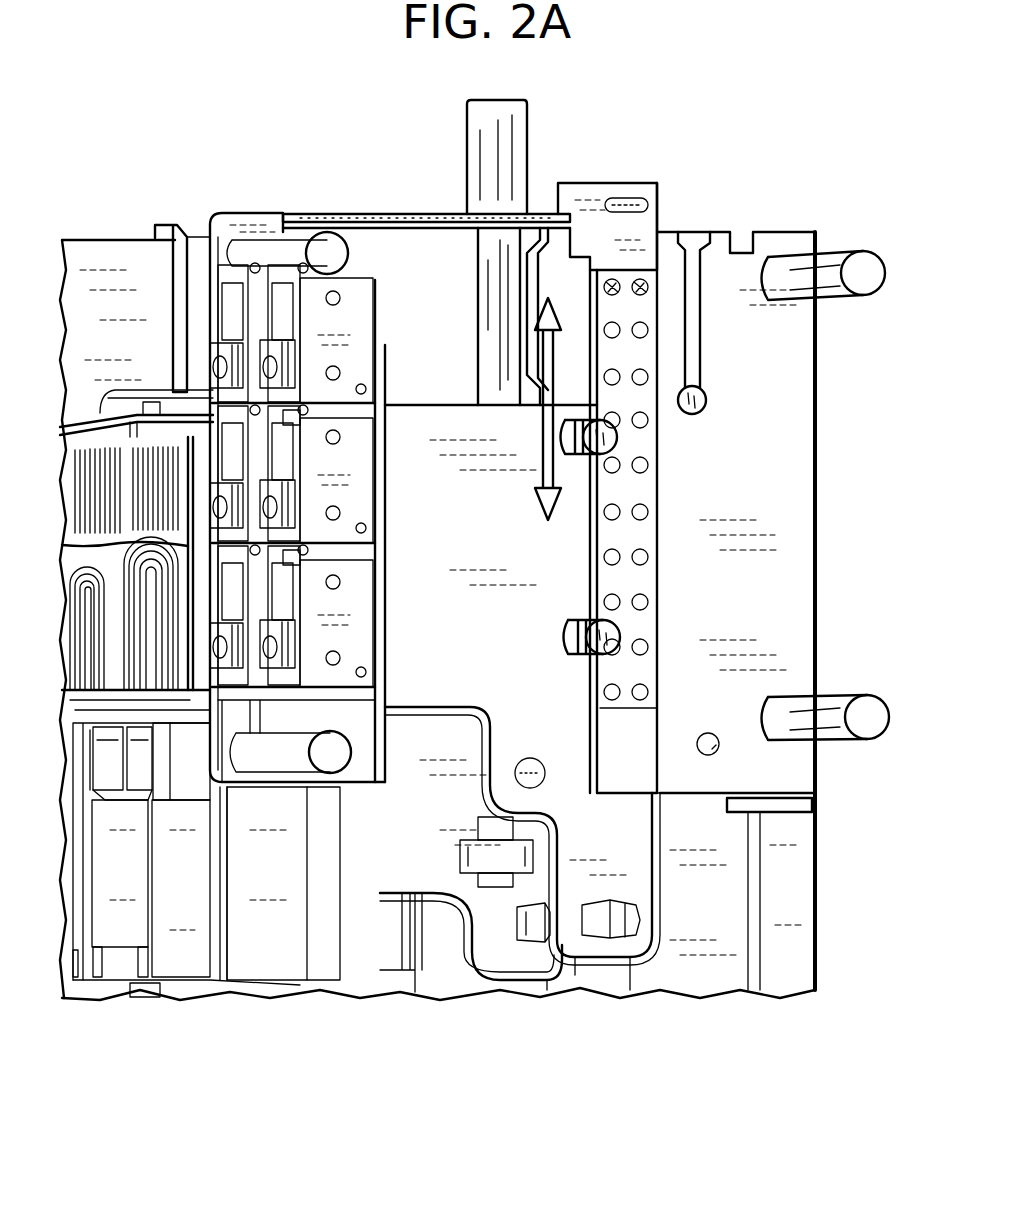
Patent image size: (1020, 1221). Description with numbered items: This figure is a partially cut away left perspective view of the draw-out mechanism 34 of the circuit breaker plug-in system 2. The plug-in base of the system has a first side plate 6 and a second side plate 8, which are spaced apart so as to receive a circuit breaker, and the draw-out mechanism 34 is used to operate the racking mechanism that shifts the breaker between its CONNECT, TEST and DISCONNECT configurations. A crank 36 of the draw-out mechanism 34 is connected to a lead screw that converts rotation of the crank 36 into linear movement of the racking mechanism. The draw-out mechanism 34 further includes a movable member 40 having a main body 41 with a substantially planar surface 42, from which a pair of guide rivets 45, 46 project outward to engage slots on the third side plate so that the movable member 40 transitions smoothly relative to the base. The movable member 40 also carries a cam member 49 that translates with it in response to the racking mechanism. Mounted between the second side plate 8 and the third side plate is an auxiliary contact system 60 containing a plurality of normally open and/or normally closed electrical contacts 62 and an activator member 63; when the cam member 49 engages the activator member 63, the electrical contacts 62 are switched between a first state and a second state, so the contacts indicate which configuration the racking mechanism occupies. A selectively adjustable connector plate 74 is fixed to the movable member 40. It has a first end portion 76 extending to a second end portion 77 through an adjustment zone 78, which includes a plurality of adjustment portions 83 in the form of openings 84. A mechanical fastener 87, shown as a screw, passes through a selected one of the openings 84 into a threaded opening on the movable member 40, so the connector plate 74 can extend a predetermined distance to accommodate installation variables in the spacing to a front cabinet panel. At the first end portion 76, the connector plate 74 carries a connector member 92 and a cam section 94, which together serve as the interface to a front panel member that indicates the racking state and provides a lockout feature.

The circuit breaker plug-in system 2 is at (665, 1014).
The first side plate 6 is at (132, 247).
The second side plate 8 is at (267, 226).
The draw-out mechanism 34 is at (828, 387).
The crank 36 is at (512, 146).
The movable member 40 is at (663, 885).
The main body 41 is at (436, 405).
The planar surface 42 is at (560, 783).
The guide rivet 45 is at (615, 440).
The guide rivet 46 is at (615, 635).
The cam member 49 is at (385, 608).
The auxiliary contact system 60 is at (233, 307).
The electrical contacts 62 is at (208, 525).
The activator member 63 is at (390, 342).
The connector plate 74 is at (653, 172).
The first end portion 76 is at (590, 184).
The second end portion 77 is at (640, 711).
The adjustment zone 78 is at (627, 352).
The adjustment portions 83 is at (623, 303).
The openings 84 is at (607, 329).
The mechanical fastener 87 is at (646, 292).
The connector member 92 is at (650, 204).
The cam section 94 is at (570, 243).